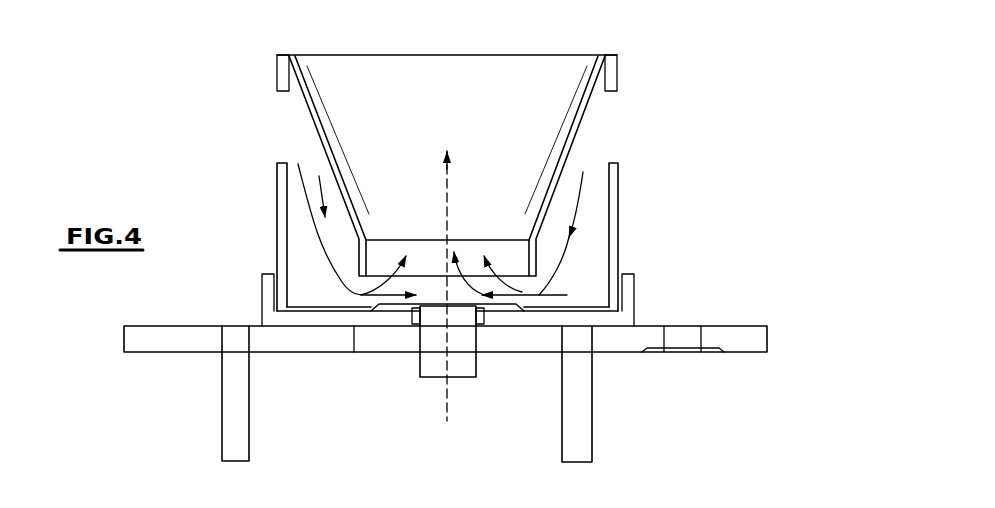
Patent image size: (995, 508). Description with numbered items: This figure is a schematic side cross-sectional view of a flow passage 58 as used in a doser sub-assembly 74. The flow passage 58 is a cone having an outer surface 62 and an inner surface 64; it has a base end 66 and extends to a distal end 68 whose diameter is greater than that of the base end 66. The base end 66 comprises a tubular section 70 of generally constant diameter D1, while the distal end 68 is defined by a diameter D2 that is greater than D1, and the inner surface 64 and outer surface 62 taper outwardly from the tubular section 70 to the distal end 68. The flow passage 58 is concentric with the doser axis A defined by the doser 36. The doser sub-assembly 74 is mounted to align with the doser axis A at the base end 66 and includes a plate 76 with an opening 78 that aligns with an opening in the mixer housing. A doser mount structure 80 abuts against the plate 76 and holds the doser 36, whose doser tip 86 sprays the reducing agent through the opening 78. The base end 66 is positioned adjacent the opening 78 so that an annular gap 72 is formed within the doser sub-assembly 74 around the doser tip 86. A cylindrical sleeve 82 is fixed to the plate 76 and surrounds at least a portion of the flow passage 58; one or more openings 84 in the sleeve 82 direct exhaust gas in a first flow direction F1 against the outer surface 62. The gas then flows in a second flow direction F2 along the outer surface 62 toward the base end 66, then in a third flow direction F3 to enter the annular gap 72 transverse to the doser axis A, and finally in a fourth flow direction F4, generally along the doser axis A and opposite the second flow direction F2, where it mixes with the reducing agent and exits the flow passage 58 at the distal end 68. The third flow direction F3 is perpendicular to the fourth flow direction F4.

The doser 36 is at (417, 375).
The flow passage 58 is at (460, 142).
The outer surface 62 is at (313, 122).
The inner surface 64 is at (313, 115).
The base end 66 is at (484, 237).
The distal end 68 is at (607, 56).
The tubular section 70 is at (368, 262).
The gap 72 is at (357, 303).
The doser sub-assembly 74 is at (712, 295).
The plate 76 is at (620, 320).
The opening 78 is at (480, 322).
The doser mount structure 80 is at (187, 348).
The sleeve 82 is at (620, 238).
The openings 84 is at (622, 107).
The doser tip 86 is at (442, 357).
The doser axis A is at (448, 407).
The diameter of tubular section D1 is at (580, 263).
The diameter of distal end D2 is at (647, 62).
The first flow direction F1 is at (295, 104).
The second flow direction F2 is at (320, 195).
The third flow direction F3 is at (560, 296).
The fourth flow direction F4 is at (450, 190).